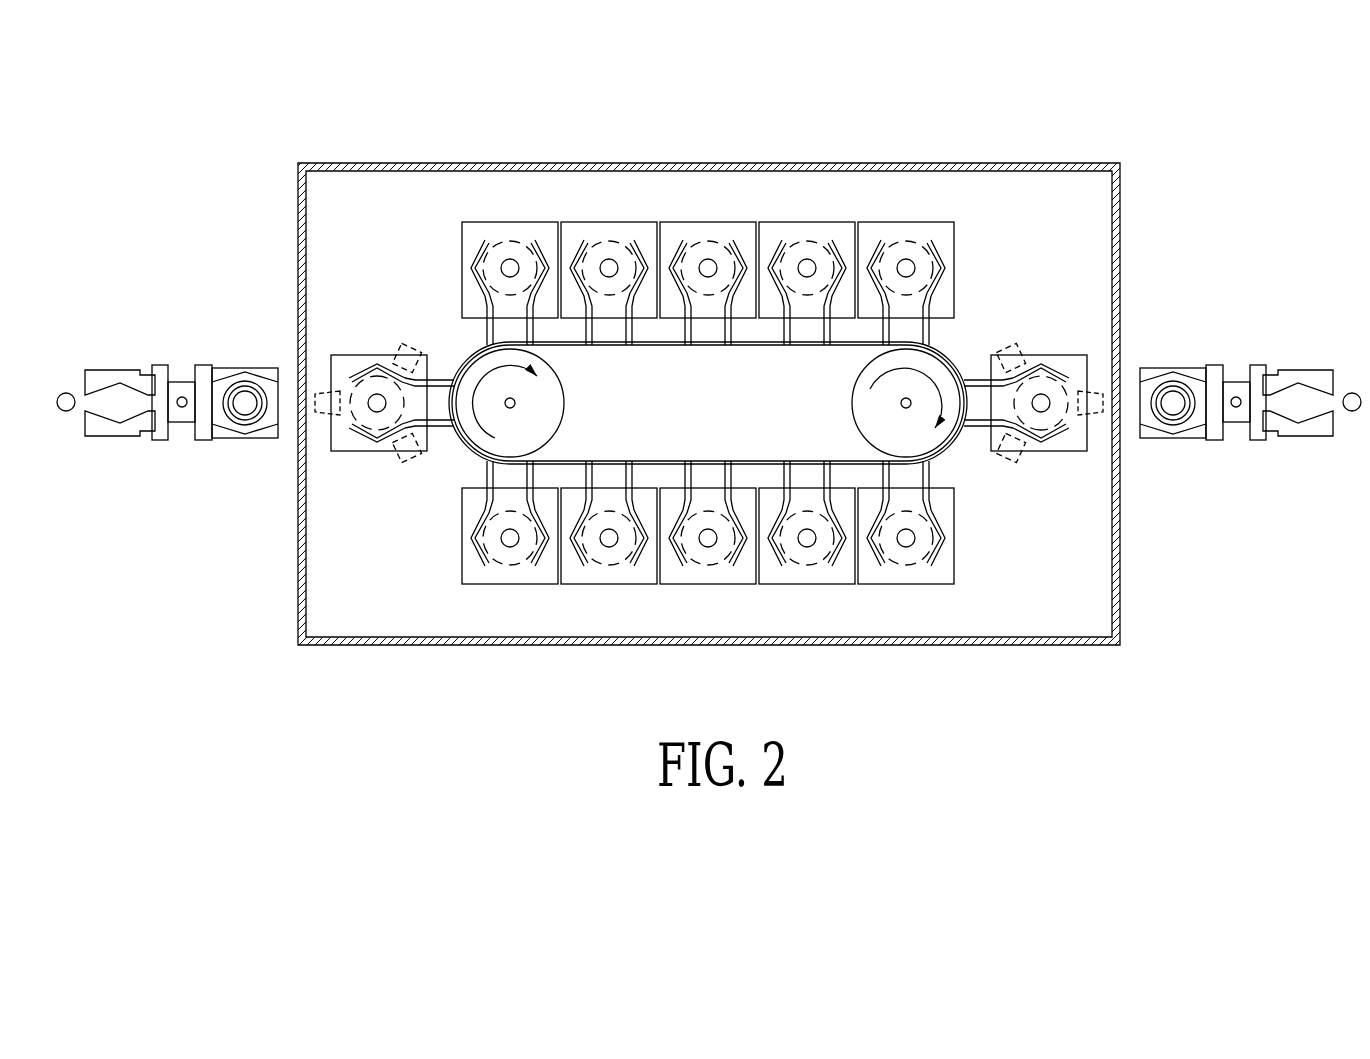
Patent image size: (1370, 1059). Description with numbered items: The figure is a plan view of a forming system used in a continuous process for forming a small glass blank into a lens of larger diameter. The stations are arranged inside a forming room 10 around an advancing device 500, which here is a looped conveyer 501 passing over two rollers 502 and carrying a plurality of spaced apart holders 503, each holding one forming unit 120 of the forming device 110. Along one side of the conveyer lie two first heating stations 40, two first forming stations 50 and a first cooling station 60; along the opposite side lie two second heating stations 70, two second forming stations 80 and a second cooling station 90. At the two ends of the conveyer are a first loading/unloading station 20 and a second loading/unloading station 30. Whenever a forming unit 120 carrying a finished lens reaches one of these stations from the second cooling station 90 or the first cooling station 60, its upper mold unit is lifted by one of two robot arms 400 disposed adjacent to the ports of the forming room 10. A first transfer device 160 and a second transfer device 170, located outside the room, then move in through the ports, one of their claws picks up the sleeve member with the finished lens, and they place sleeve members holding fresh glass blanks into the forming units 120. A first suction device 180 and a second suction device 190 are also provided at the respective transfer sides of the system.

The forming room 10 is at (665, 163).
The first loading/unloading station 20 is at (362, 455).
The second loading/unloading station 30 is at (1040, 455).
The first heating station 40 is at (531, 183).
The first forming station 50 is at (720, 220).
The first cooling station 60 is at (917, 220).
The second heating station 70 is at (819, 590).
The second forming station 80 is at (621, 590).
The second cooling station 90 is at (523, 590).
The forming device 110 is at (481, 183).
The forming unit 120 is at (321, 380).
The first transfer device 160 is at (180, 378).
The second transfer device 170 is at (1233, 378).
The first suction device 180 is at (68, 392).
The second suction device 190 is at (1352, 392).
The robot arm 400 is at (405, 340).
The advancing device 500 is at (708, 308).
The looped conveyer 501 is at (708, 348).
The roller 502 is at (565, 402).
The holder 503 is at (572, 238).